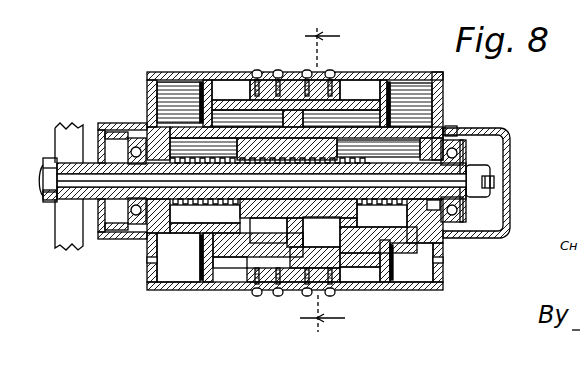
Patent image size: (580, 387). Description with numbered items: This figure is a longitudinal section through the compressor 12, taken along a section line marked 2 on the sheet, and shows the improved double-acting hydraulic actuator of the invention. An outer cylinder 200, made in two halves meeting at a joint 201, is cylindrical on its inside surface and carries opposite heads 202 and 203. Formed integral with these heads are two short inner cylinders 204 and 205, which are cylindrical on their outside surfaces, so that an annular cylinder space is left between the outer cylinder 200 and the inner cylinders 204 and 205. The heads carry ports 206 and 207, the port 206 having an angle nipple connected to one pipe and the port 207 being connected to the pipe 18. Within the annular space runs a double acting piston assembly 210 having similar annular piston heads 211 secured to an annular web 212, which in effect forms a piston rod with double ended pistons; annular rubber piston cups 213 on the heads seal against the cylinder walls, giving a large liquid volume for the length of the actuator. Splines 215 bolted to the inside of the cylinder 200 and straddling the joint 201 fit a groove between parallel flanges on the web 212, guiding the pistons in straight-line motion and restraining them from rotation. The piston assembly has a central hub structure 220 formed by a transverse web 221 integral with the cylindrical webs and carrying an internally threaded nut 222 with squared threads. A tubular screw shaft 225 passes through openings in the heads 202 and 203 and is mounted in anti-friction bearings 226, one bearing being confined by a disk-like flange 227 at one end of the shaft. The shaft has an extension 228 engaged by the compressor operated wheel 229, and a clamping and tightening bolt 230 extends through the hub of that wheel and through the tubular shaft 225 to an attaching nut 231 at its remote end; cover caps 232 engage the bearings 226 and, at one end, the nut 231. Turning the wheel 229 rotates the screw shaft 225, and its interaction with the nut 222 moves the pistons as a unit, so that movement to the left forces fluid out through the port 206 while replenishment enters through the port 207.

The compressor 12 is at (138, 66).
The pipe 18 is at (440, 248).
The outer cylinder 200 is at (210, 62).
The joint 201 is at (293, 73).
The head 202 is at (152, 97).
The head 203 is at (438, 90).
The inner cylinder 204 is at (183, 128).
The inner cylinder 205 is at (392, 130).
The port 206 is at (147, 262).
The port 207 is at (440, 262).
The double acting piston assembly 210 is at (357, 95).
The annular piston head 211 is at (383, 85).
The annular web 212 is at (230, 100).
The annular rubber piston cup 213 is at (390, 267).
The spline 215 is at (320, 72).
The central hub structure 220 is at (283, 230).
The transverse web 221 is at (340, 267).
The nut 222 is at (255, 212).
The tubular screw shaft 225 is at (100, 232).
The anti-friction bearing 226 is at (450, 127).
The disk-like flange 227 is at (98, 124).
The extension 228 is at (88, 163).
The compressor operated wheel 229 is at (62, 200).
The clamping and tightening bolt 230 is at (72, 175).
The attaching nut 231 is at (492, 178).
The cover cap 232 is at (508, 195).
The section line 2 is at (322, 175).